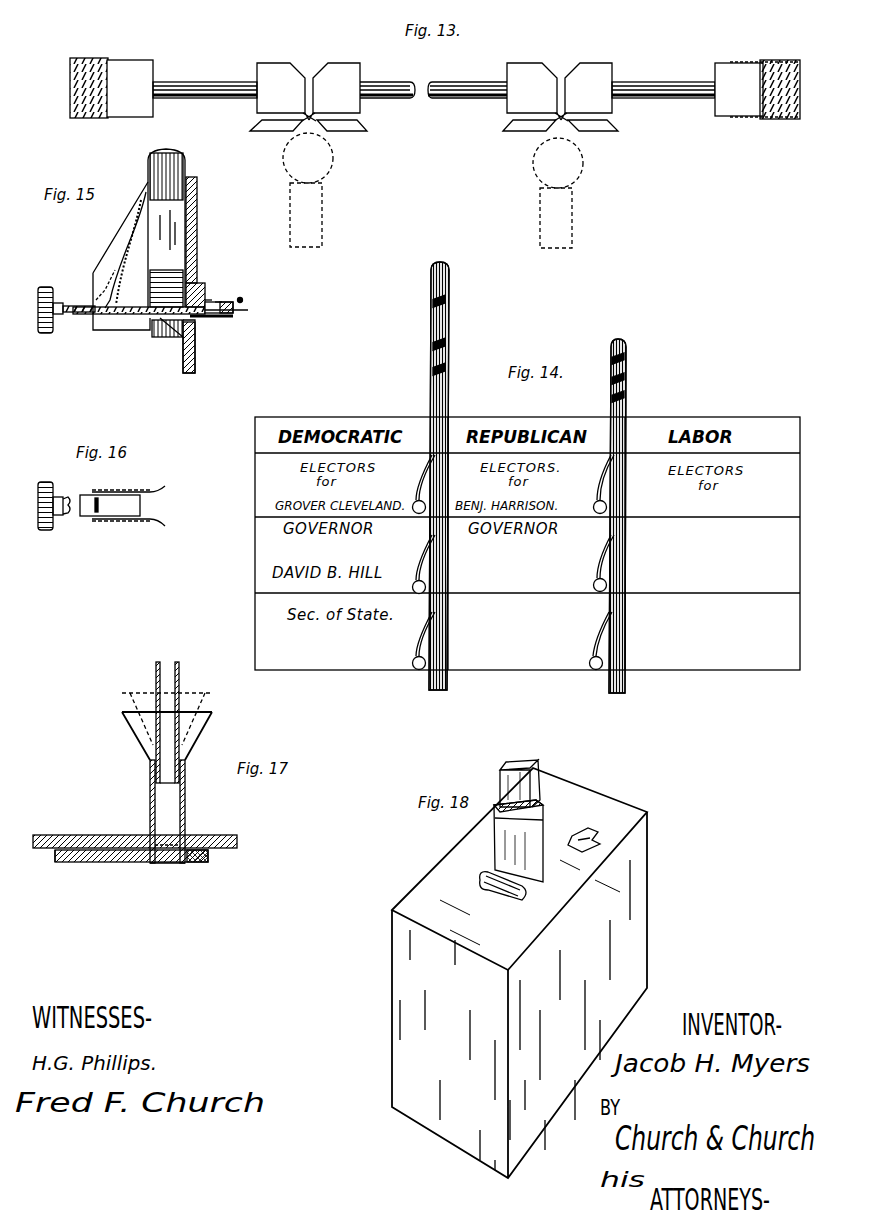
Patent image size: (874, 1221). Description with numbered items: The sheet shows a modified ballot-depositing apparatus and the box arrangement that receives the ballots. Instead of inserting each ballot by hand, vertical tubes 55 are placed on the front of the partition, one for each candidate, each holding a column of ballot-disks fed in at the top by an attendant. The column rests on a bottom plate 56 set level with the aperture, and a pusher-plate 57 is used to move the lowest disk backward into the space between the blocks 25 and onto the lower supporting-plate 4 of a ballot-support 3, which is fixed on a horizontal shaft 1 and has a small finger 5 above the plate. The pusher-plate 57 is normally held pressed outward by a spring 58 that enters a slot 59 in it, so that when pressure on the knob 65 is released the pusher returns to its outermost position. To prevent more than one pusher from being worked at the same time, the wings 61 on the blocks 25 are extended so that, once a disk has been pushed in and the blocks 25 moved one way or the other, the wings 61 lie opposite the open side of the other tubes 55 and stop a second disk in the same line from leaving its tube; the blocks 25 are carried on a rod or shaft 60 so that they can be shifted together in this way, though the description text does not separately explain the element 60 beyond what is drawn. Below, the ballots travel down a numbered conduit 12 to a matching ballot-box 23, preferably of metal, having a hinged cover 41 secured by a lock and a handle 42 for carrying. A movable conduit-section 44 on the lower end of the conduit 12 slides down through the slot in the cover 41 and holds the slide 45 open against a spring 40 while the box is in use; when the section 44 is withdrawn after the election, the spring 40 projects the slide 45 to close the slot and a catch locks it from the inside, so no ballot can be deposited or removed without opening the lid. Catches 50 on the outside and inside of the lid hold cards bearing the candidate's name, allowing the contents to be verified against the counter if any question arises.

In FIG. 15, the horizontal shaft 1 is at (242, 299).
In FIG. 15, the ballot-support 3 is at (232, 312).
In FIG. 15, the lower supporting-plate 4 is at (215, 316).
In FIG. 15, the small finger 5 is at (222, 301).
In FIG. 17, the conduit 12 is at (156, 670).
In FIG. 18, the conduit 12 is at (516, 765).
In FIG. 18, the ballot-box 23 is at (519, 973).
In FIG. 13, the block 25 is at (308, 92).
In FIG. 15, the block 25 is at (210, 300).
In FIG. 17, the spring 40 is at (55, 857).
In FIG. 17, the hinged cover 41 is at (232, 836).
In FIG. 18, the hinged cover 41 is at (432, 898).
In FIG. 18, the handle 42 is at (515, 903).
In FIG. 17, the movable conduit-section 44 is at (185, 785).
In FIG. 18, the movable conduit-section 44 is at (518, 841).
In FIG. 17, the slide 45 is at (128, 862).
In FIG. 18, the catch 50 is at (595, 832).
In FIG. 13, the vertical tube 55 is at (433, 190).
In FIG. 15, the vertical tube 55 is at (146, 176).
In FIG. 14, the vertical tube 55 is at (450, 320).
In FIG. 15, the bottom plate 56 is at (160, 338).
In FIG. 15, the pusher-plate 57 is at (130, 314).
In FIG. 16, the pusher-plate 57 is at (122, 506).
In FIG. 15, the spring 58 is at (121, 250).
In FIG. 16, the slot 59 is at (90, 519).
In FIG. 13, the shaft 60 is at (470, 84).
In FIG. 13, the wing 61 is at (360, 127).
In FIG. 15, the knob 65 is at (45, 335).
In FIG. 16, the knob 65 is at (48, 533).
In FIG. 14, the knob 65 is at (415, 513).